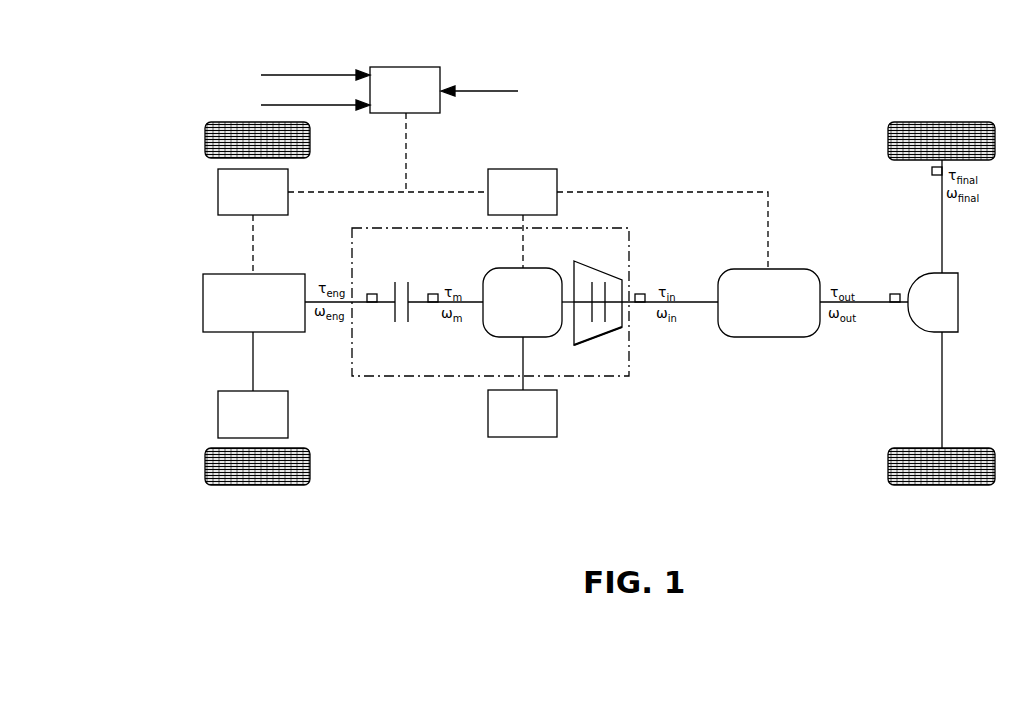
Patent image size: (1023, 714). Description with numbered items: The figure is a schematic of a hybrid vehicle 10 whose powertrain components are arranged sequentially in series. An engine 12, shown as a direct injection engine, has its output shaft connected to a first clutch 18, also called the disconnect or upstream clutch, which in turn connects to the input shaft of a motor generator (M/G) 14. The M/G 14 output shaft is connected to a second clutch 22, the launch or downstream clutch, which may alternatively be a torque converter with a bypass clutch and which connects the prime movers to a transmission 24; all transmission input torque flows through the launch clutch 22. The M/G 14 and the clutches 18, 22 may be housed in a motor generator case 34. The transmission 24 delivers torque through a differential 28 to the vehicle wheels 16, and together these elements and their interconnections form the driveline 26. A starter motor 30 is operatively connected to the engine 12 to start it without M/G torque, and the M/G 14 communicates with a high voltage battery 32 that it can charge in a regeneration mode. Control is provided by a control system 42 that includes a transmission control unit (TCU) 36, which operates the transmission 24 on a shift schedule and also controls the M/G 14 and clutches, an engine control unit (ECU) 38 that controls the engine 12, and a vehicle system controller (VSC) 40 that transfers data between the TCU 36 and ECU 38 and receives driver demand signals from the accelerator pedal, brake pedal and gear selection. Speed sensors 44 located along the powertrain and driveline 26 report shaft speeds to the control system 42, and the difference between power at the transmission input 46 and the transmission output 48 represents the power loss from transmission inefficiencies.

The hybrid vehicle 10 is at (745, 76).
The engine 12 is at (203, 302).
The motor generator (M/G) 14 is at (536, 268).
The vehicle wheels 16 is at (942, 122).
The first clutch (disconnect clutch) 18 is at (394, 318).
The second clutch (launch clutch) 22 is at (606, 314).
The transmission 24 is at (787, 269).
The driveline 26 is at (957, 502).
The differential 28 is at (958, 302).
The starter motor 30 is at (218, 413).
The battery 32 is at (523, 437).
The motor generator case 34 is at (595, 376).
The transmission control unit (TCU) 36 is at (523, 169).
The engine control unit (ECU) 38 is at (218, 192).
The vehicle system controller (VSC) 40 is at (406, 67).
The control system 42 is at (545, 79).
The speed sensors 44 is at (372, 294).
The transmission input 46 is at (692, 302).
The transmission output 48 is at (875, 302).